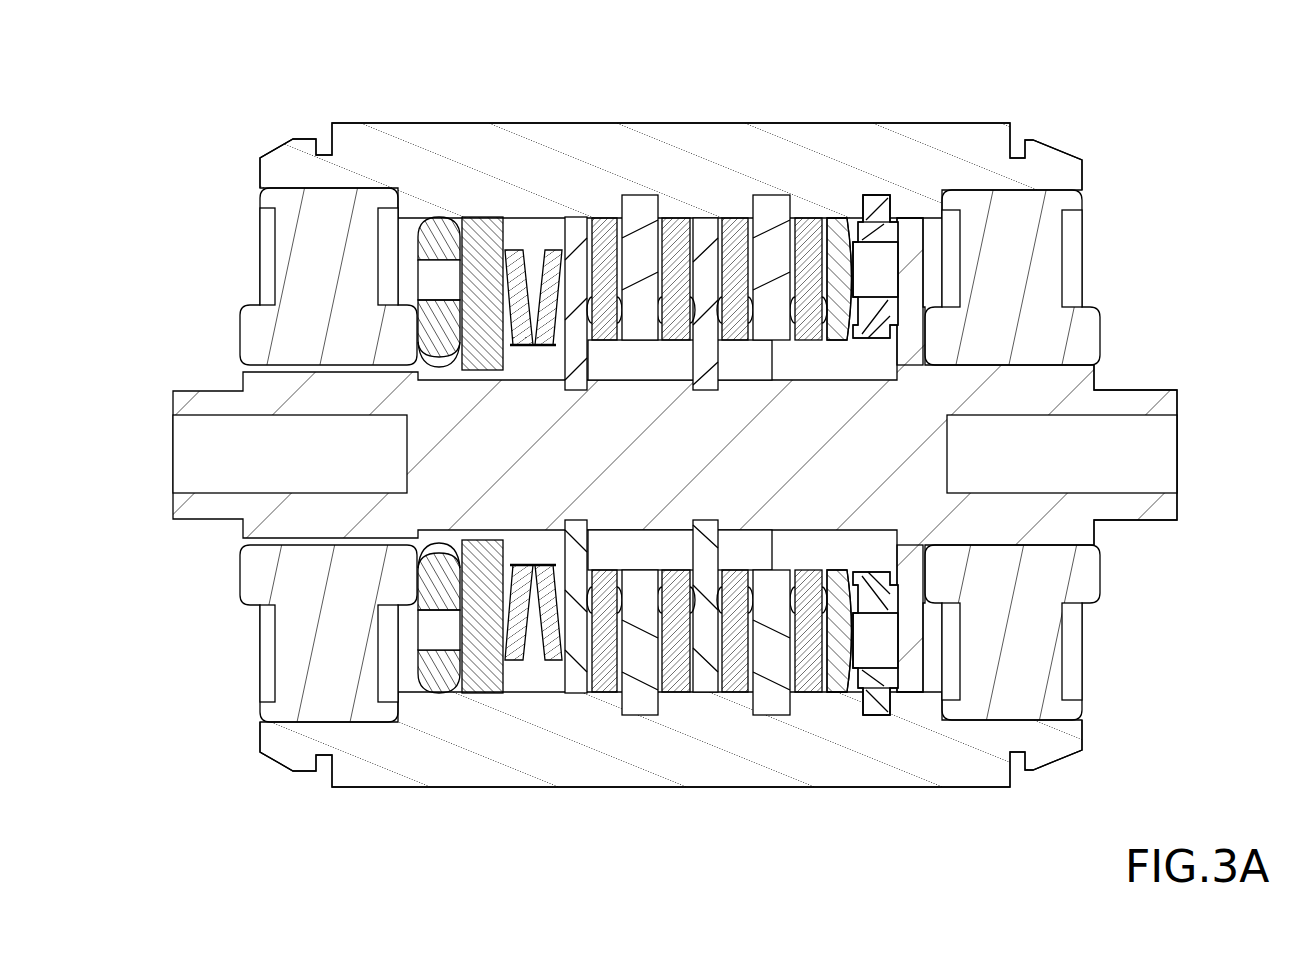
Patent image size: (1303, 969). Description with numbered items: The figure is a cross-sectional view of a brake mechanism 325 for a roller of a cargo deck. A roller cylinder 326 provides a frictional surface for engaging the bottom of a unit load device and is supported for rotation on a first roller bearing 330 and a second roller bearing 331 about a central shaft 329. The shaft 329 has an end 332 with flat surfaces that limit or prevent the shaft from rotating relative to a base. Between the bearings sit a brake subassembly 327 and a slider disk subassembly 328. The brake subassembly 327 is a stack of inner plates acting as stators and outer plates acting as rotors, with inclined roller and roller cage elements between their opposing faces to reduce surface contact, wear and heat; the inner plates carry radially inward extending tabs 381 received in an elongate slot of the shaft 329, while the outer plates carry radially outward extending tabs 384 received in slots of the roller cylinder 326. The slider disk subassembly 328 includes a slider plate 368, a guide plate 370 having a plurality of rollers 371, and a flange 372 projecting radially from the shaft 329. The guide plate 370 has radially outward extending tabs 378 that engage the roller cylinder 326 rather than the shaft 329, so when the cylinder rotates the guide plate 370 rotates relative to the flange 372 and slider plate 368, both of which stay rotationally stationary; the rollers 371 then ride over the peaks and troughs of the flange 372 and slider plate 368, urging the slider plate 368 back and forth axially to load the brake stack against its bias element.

The brake mechanism 325 is at (207, 123).
The roller cylinder 326 is at (568, 122).
The brake subassembly 327 is at (417, 692).
The slider disk subassembly 328 is at (920, 692).
The shaft 329 is at (1123, 512).
The first roller bearing 330 is at (296, 232).
The second roller bearing 331 is at (1060, 260).
The end 332 is at (1147, 400).
The slider plate 368 is at (842, 232).
The guide plate 370 is at (866, 194).
The rollers 371 is at (887, 250).
The flange 372 is at (912, 247).
The radially outward extending tabs 378 is at (884, 194).
The radially inward extending tabs 381 is at (590, 385).
The radially outward extending tabs 384 is at (632, 207).